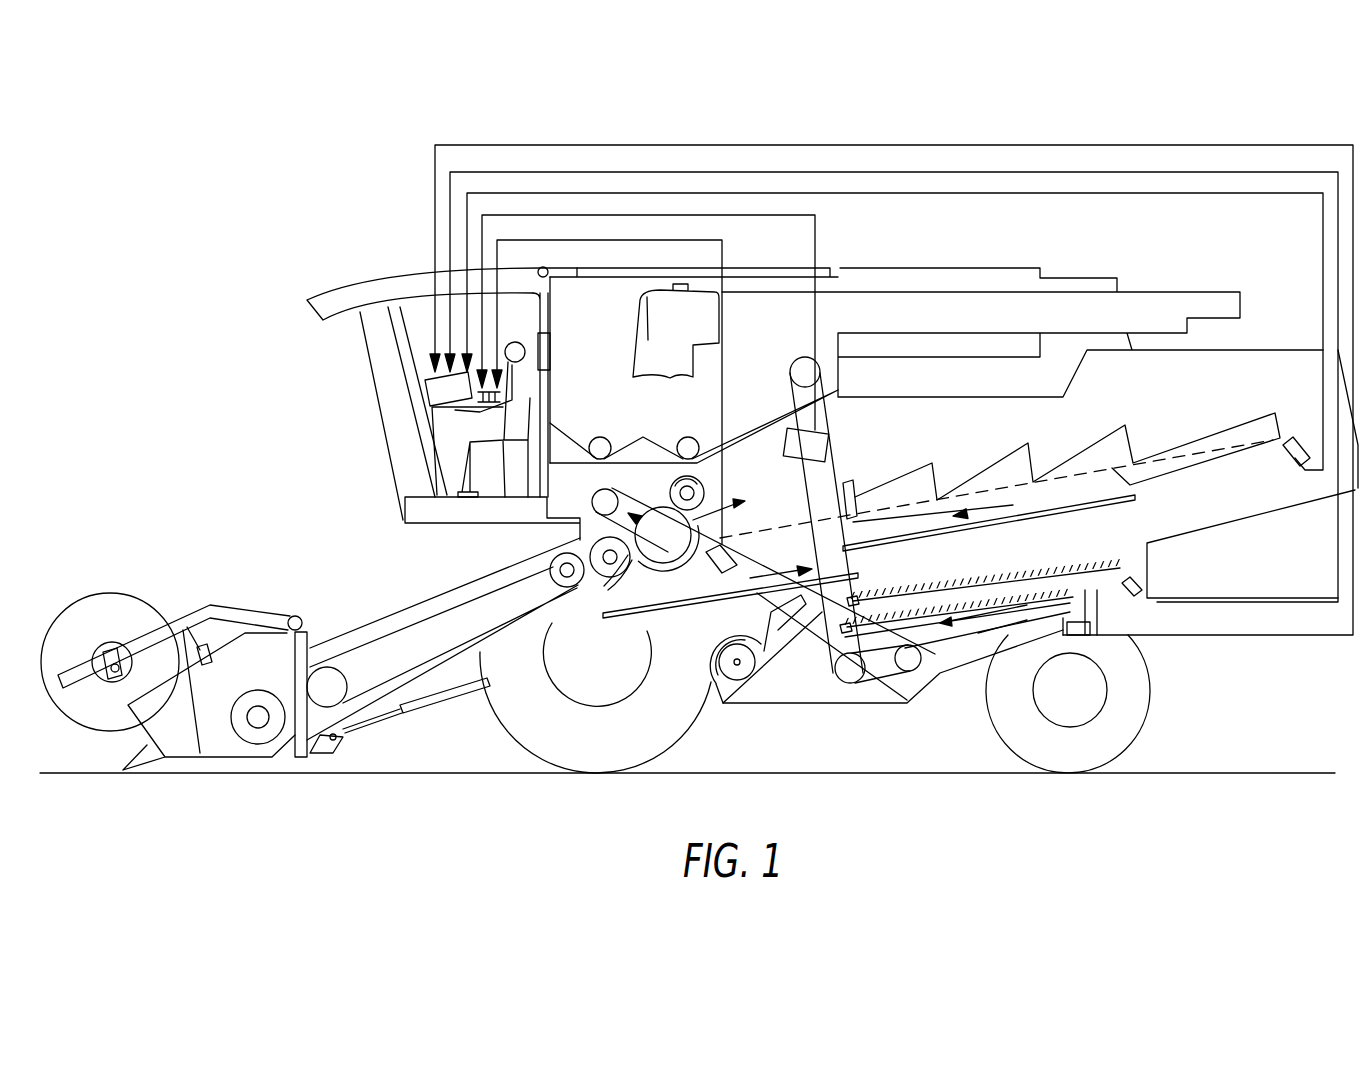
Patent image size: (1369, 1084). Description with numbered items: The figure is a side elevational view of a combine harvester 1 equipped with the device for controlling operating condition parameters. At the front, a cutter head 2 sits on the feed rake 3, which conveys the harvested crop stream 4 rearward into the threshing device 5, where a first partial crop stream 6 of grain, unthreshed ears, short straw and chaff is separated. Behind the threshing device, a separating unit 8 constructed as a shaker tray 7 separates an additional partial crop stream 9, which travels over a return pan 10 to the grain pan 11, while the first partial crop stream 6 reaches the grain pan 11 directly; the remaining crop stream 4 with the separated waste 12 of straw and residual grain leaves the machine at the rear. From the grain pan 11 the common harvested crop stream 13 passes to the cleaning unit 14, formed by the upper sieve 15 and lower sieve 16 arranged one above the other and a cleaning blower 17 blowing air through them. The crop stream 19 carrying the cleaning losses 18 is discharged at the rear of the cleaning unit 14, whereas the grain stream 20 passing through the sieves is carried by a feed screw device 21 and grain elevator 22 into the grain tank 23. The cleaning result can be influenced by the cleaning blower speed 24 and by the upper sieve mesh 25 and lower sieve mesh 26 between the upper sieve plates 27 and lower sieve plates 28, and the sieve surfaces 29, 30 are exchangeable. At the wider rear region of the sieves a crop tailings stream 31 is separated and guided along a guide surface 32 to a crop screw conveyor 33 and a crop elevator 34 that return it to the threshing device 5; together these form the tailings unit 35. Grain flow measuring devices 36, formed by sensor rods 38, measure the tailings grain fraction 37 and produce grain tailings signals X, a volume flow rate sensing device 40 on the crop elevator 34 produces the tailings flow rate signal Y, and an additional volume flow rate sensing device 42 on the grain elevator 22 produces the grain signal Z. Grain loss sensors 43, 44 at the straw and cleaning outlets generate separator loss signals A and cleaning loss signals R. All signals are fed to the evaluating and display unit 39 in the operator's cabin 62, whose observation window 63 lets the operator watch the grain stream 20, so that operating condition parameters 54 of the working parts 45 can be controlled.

The combine harvester 1 is at (185, 428).
The cutter head 2 is at (180, 580).
The feed rake 3 is at (358, 632).
The harvested crop stream 4 is at (733, 483).
The threshing device 5 is at (619, 470).
The first partial crop stream 6 is at (652, 583).
The shaker tray 7 is at (1000, 454).
The separating unit 8 is at (1000, 454).
The additional partial crop stream 9 is at (992, 507).
The return pan 10 is at (1138, 497).
The grain pan 11 is at (623, 618).
The separated waste 12 is at (1238, 415).
The common harvested crop stream 13 is at (782, 570).
The cleaning unit 14 is at (963, 672).
The upper sieve 15 is at (1024, 590).
The lower sieve 16 is at (960, 598).
The cleaning blower 17 is at (737, 692).
The cleaning losses 18 is at (1212, 572).
The crop stream comprising cleaning losses 19 is at (1213, 566).
The grain stream 20 is at (962, 672).
The feed screw device 21 is at (847, 680).
The grain elevator 22 is at (828, 467).
The grain tank 23 is at (593, 324).
The cleaning blower speed 24 is at (707, 660).
The upper sieve mesh 25 is at (983, 579).
The lower sieve mesh 26 is at (925, 640).
The upper sieve plates 27 is at (923, 557).
The lower sieve plates 28 is at (997, 598).
The upper sieve surface 29 is at (1118, 585).
The lower sieve surface 30 is at (1063, 622).
The crop tailings stream 31 is at (600, 514).
The guide surface 32 is at (1000, 640).
The crop screw conveyor 33 is at (930, 672).
The crop elevator 34 is at (800, 640).
The tailings unit 35 is at (887, 688).
The grain flow measuring devices 36 is at (1108, 605).
The tailings grain fraction 37 is at (1048, 655).
The sensor rods 38 is at (1078, 590).
The evaluating and display unit 39 is at (447, 432).
The volume flow rate sensing device 40 is at (722, 575).
The additional volume flow rate sensing device 42 is at (818, 447).
The grain loss sensor 43 is at (1303, 458).
The grain loss sensor 44 is at (1142, 595).
The working parts 45 is at (947, 462).
The operating condition parameter 54 is at (875, 598).
The operator's cabin 62 is at (423, 318).
The observation window 63 is at (550, 343).
The separator loss signals A is at (1323, 210).
The cleaning loss signals R is at (1338, 248).
The grain tailings signals X is at (1353, 287).
The tailings flow rate signal Y is at (722, 253).
The grain signal Z is at (817, 243).